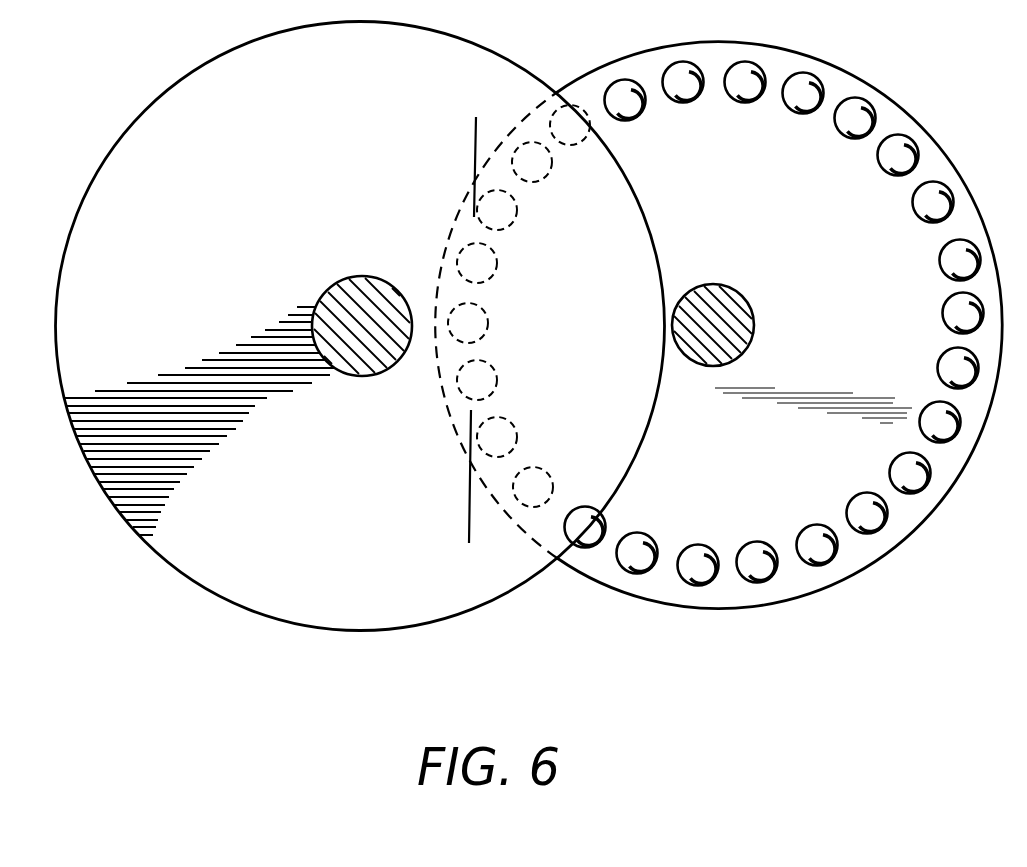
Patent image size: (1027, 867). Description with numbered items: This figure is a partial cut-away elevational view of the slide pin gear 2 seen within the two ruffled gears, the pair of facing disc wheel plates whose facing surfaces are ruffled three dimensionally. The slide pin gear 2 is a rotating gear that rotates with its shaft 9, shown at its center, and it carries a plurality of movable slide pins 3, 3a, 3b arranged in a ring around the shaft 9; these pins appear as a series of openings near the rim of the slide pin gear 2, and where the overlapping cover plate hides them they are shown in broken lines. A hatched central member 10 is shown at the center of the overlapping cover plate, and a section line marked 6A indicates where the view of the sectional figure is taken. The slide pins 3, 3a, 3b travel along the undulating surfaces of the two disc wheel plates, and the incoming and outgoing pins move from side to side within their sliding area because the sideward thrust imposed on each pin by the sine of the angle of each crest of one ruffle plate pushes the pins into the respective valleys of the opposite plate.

The slide pin gear 2 is at (737, 216).
The slide pin 3 is at (480, 378).
The slide pin 3a is at (471, 321).
The slide pin 3b is at (480, 261).
The shaft 9 is at (757, 313).
The hub 10 is at (327, 291).
The section line 6A is at (452, 525).